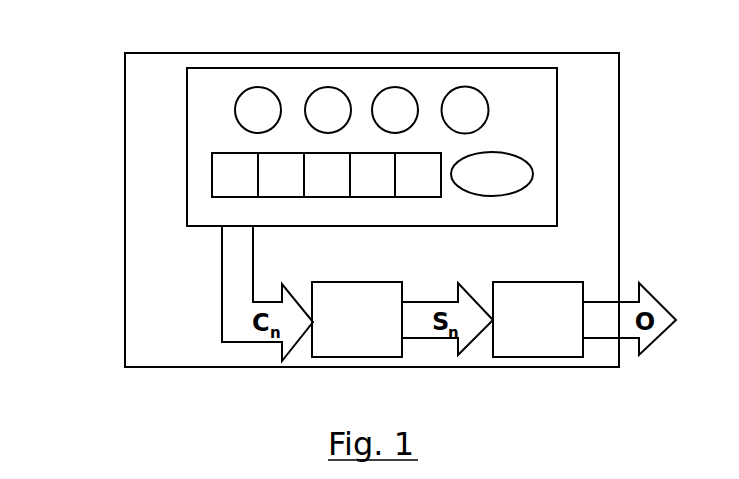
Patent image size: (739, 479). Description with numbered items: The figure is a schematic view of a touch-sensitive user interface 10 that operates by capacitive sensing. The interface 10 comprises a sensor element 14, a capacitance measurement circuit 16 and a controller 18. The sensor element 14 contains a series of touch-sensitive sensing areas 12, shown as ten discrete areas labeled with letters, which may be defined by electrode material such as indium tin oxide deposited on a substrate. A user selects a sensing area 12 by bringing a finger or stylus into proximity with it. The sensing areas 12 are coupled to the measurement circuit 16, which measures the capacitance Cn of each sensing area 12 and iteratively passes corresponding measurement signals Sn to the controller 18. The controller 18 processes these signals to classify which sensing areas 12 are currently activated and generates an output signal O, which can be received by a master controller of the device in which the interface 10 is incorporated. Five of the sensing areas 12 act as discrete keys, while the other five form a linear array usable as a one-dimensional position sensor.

The touch-sensitive user interface 10 is at (125, 107).
The sensing areas 12 is at (293, 153).
The sensor element 14 is at (193, 226).
The capacitance measurement circuit 16 is at (350, 309).
The controller 18 is at (531, 309).